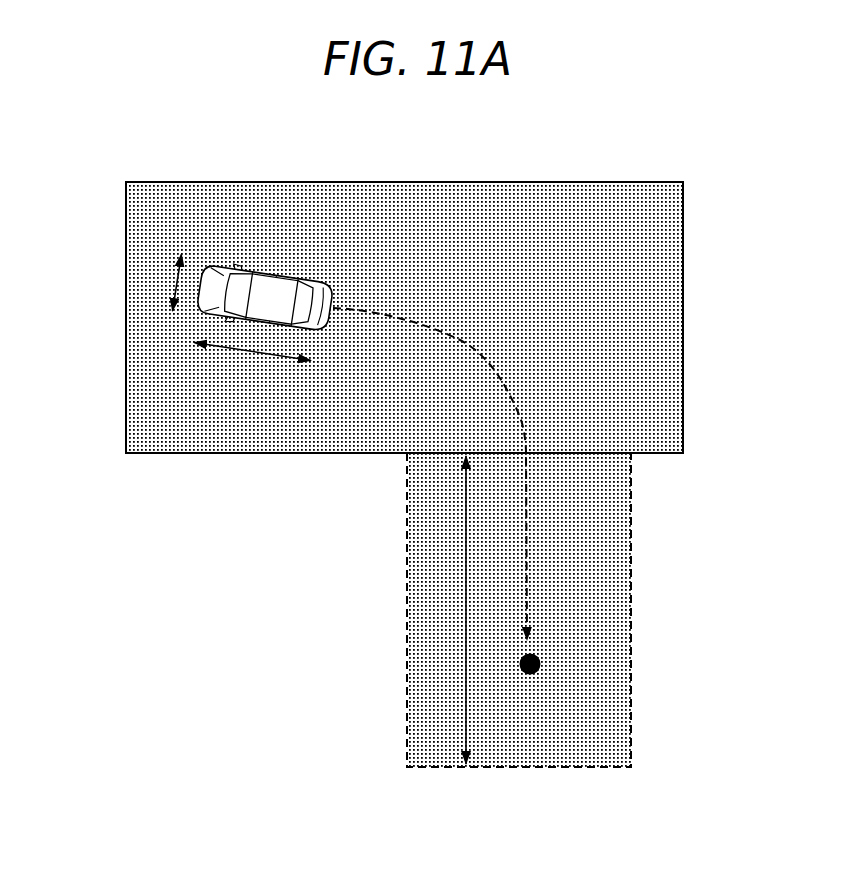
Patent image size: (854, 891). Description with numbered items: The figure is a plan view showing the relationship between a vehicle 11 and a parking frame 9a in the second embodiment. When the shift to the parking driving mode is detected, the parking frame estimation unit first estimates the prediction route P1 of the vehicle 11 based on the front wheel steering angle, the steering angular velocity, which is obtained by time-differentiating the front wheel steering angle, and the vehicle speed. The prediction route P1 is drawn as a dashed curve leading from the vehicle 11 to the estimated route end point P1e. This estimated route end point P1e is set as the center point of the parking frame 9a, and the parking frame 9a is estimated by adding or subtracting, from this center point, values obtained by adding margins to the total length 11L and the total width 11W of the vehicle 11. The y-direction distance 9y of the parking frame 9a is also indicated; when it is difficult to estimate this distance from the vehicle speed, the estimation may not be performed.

The vehicle 11 is at (292, 276).
The total width of the vehicle 11W is at (170, 273).
The total length of the vehicle 11L is at (250, 352).
The prediction route P1 is at (478, 350).
The estimated route end point P1e is at (540, 672).
The y-direction distance of the parking frame 9y is at (466, 603).
The parking frame 9a is at (632, 554).